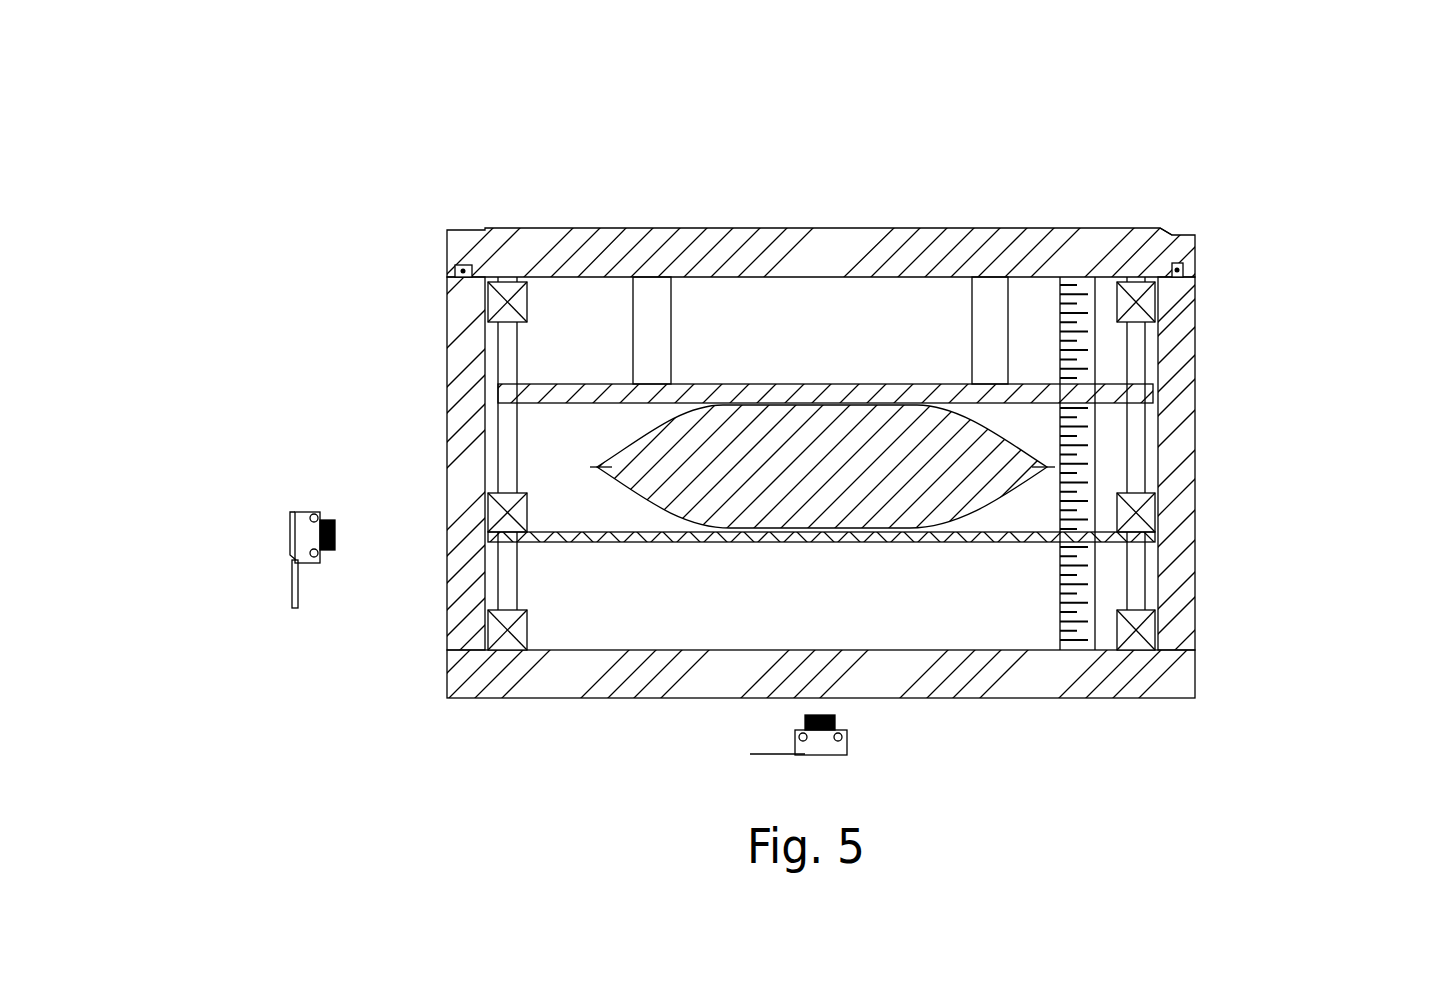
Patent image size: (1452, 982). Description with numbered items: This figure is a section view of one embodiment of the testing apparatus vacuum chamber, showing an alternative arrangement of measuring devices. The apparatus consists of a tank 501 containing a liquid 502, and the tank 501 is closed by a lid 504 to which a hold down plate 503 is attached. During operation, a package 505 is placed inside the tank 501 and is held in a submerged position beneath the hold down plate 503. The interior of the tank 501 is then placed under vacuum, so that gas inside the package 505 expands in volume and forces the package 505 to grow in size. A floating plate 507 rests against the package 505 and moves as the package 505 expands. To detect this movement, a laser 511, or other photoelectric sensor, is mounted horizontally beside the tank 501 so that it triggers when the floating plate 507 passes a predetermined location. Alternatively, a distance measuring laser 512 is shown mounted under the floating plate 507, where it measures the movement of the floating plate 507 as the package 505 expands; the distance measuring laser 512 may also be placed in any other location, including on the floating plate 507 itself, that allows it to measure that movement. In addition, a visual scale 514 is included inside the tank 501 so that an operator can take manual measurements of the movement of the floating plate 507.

The tank 501 is at (447, 305).
The liquid 502 is at (560, 335).
The hold down plate 503 is at (1140, 393).
The lid 504 is at (1195, 236).
The package 505 is at (1012, 447).
The floating plate 507 is at (1157, 538).
The laser 511 is at (290, 544).
The distance measuring laser 512 is at (804, 756).
The visual scale 514 is at (1099, 598).